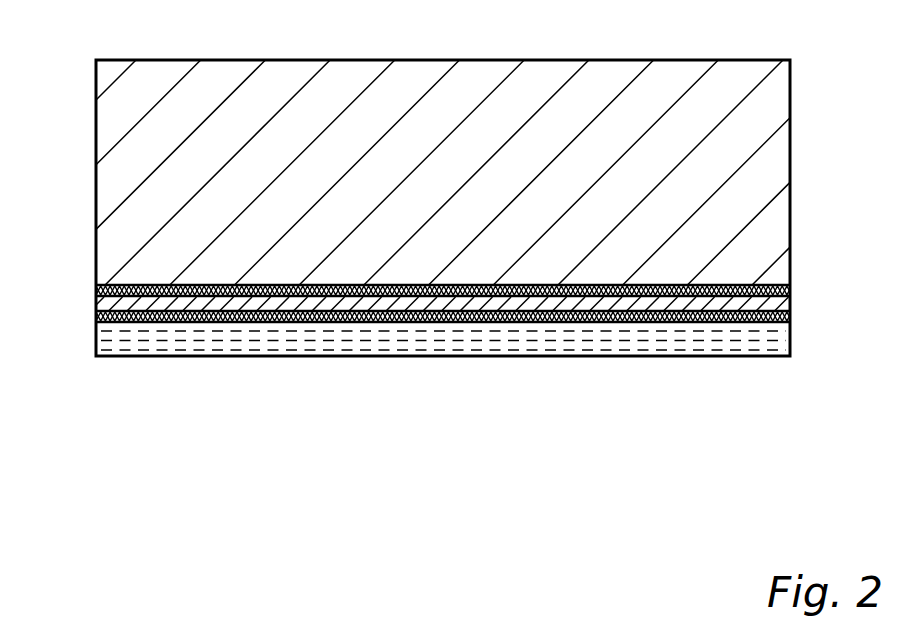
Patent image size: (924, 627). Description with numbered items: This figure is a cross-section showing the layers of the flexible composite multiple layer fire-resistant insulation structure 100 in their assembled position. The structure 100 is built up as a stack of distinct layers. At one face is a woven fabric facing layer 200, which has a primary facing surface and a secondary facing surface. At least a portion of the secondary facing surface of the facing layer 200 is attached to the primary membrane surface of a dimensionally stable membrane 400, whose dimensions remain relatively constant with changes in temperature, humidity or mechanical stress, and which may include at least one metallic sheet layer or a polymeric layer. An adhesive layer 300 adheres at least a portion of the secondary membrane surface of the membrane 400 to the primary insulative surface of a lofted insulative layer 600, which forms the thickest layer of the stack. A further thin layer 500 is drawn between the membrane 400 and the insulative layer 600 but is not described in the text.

The flexible composite multiple layer fire-resistant insulation structure 100 is at (279, 35).
The woven fabric facing layer 200 is at (790, 337).
The adhesive layer 300 is at (96, 317).
The dimensionally stable membrane 400 is at (790, 303).
The second adhesive layer 500 is at (790, 289).
The lofted insulative layer 600 is at (790, 135).